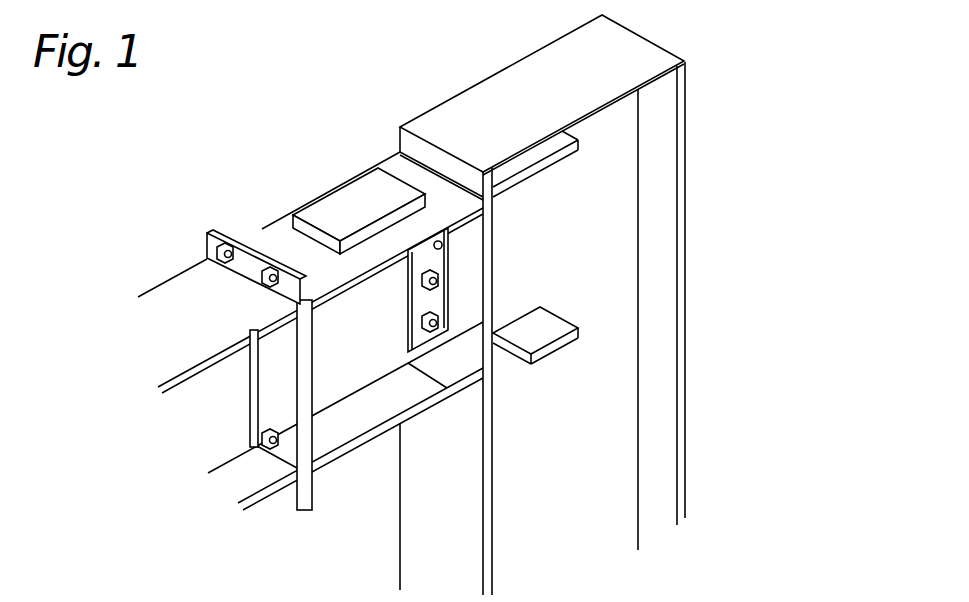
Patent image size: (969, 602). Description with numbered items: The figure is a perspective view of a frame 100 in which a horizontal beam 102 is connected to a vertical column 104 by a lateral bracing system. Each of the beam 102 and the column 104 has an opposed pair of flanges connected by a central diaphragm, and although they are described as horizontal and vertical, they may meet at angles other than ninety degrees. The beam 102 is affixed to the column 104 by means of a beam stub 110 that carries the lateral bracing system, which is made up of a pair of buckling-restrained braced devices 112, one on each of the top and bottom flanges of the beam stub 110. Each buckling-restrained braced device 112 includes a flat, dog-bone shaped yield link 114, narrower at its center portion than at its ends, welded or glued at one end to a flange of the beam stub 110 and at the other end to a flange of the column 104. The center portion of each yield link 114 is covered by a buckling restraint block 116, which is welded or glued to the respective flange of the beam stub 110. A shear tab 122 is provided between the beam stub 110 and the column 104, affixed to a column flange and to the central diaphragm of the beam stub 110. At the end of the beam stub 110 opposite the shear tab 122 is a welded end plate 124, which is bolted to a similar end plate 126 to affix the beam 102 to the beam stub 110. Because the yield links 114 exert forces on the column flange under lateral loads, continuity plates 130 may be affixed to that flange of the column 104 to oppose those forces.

The frame 100 is at (722, 46).
The beam 102 is at (209, 337).
The column 104 is at (577, 442).
The beam stub 110 is at (382, 356).
The buckling-restrained braced device 112 is at (250, 161).
The yield link 114 is at (395, 163).
The buckling restraint block 116 is at (352, 203).
The shear tab 122 is at (418, 302).
The end plate 124 is at (224, 230).
The end plate 126 is at (224, 230).
The continuity plate 130 is at (546, 165).